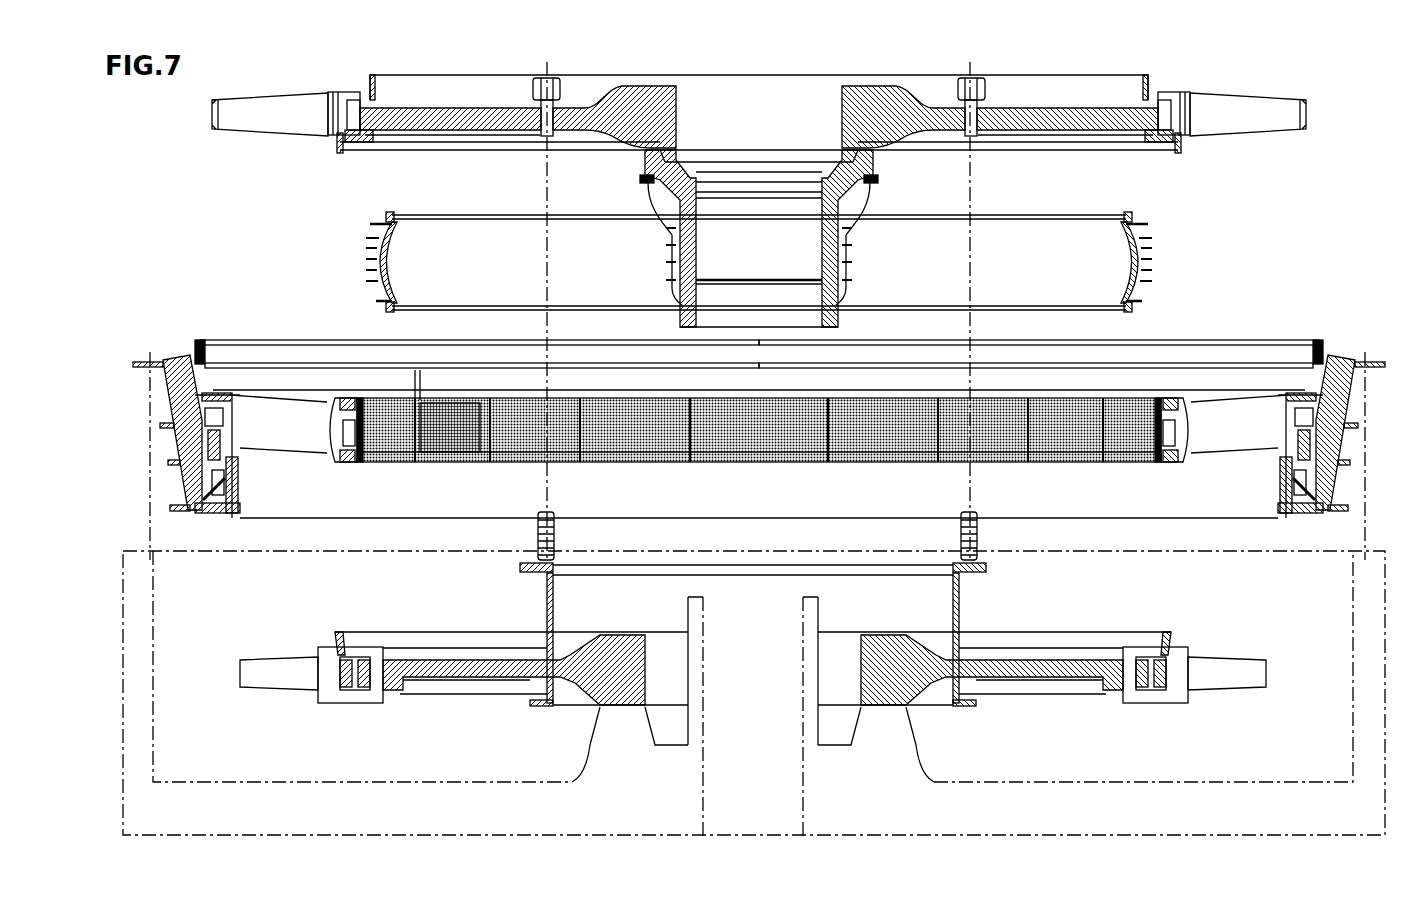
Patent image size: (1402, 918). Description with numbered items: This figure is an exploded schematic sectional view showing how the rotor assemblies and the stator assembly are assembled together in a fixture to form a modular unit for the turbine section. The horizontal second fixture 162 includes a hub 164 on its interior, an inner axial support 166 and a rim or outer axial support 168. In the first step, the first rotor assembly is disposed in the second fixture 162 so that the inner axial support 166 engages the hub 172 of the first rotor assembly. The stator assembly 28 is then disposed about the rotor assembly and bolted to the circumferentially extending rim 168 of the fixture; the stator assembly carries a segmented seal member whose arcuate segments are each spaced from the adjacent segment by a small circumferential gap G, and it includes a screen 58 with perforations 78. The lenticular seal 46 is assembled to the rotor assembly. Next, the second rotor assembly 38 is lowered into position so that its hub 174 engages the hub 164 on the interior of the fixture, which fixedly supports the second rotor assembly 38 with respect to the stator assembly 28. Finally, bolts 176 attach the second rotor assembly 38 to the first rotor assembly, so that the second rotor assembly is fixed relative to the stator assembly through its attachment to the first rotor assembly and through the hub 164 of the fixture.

The second rotor assembly 38 is at (1162, 86).
The lenticular seal 46 is at (372, 250).
The hub of the second rotor assembly 174 is at (692, 245).
The stator assembly 28 is at (176, 340).
The screen 58 is at (612, 393).
The screen perforations 78 is at (442, 440).
The circumferential gap G is at (386, 378).
The bolts 176 is at (548, 510).
The rim or outer axial support 168 is at (141, 640).
The hub of the first rotor assembly 172 is at (618, 633).
The inner axial support 166 is at (606, 735).
The hub of the fixture 164 is at (700, 705).
The second fixture 162 is at (490, 848).